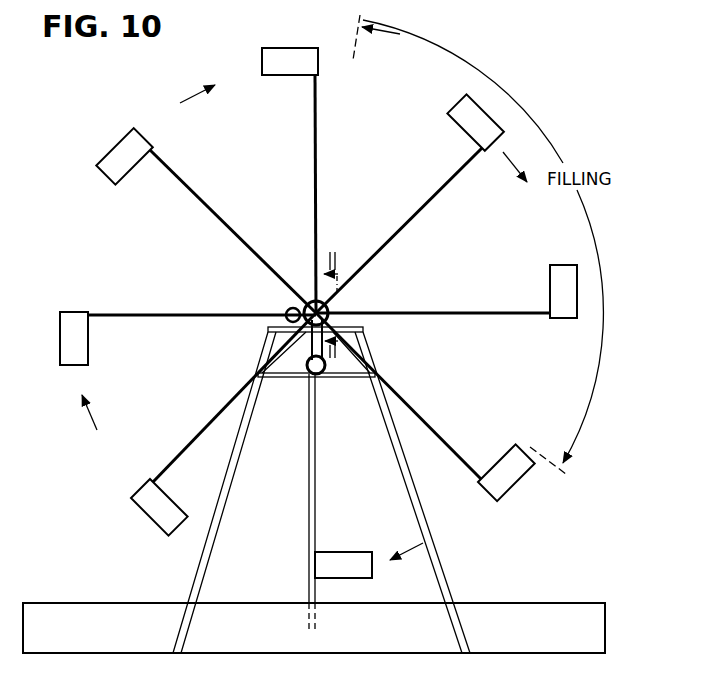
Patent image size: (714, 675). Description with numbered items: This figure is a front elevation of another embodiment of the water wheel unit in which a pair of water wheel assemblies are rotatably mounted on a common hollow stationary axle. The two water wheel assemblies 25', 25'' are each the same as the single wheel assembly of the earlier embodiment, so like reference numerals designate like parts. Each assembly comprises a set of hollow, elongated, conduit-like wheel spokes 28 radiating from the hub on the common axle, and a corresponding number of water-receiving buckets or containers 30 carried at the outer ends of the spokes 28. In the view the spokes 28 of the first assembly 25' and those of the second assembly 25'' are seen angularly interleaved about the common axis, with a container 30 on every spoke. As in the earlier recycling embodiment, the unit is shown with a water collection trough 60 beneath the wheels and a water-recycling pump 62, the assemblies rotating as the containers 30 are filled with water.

The wheel spokes 28 is at (317, 243).
The water-receiving containers 30 is at (276, 48).
The water wheel assembly 25' is at (328, 318).
The water wheel assembly 25'' is at (319, 321).
The water collection trough 60 is at (573, 601).
The water-recycling pump 62 is at (326, 374).